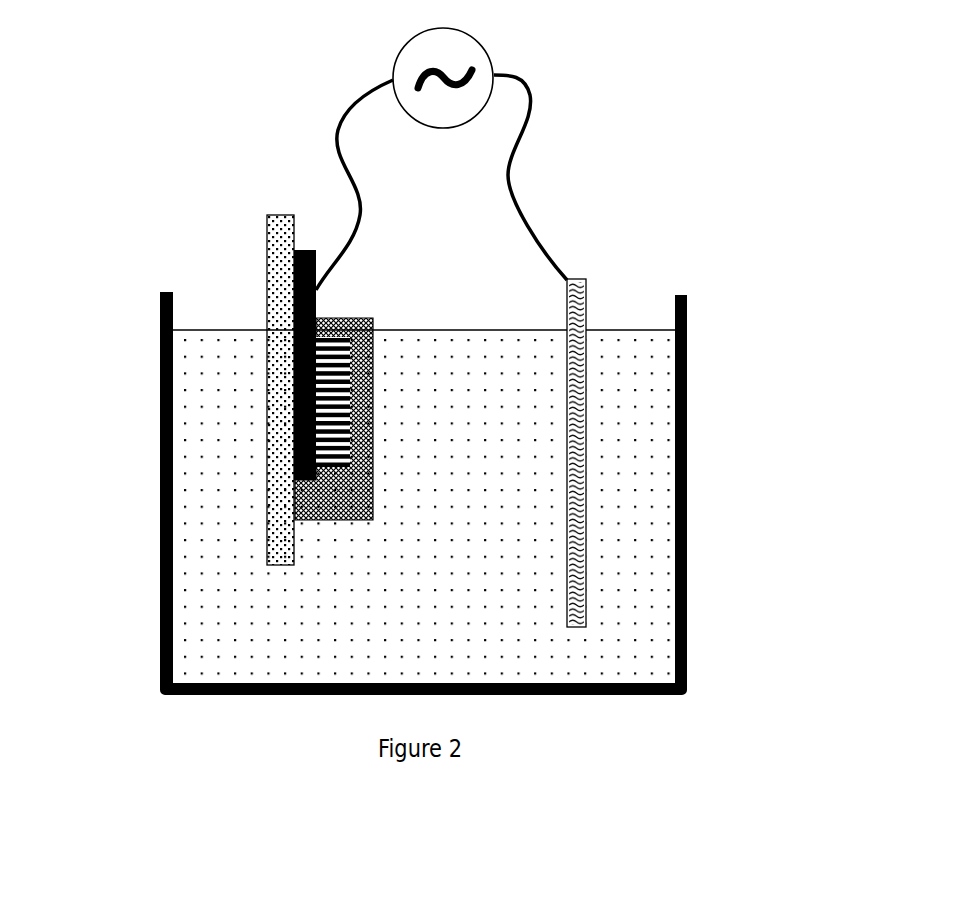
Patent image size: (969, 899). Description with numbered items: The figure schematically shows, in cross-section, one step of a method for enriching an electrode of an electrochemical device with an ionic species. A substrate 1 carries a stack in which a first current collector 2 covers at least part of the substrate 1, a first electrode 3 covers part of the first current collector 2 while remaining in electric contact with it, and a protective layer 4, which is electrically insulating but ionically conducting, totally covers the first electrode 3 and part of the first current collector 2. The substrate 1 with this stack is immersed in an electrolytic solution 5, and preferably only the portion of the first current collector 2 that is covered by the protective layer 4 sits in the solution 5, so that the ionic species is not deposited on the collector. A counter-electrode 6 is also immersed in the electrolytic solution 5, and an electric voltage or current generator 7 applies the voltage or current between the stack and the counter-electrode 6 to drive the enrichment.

The substrate 1 is at (280, 352).
The first current collector 2 is at (294, 458).
The first electrode 3 is at (293, 418).
The protective layer 4 is at (293, 495).
The electrolytic solution 5 is at (663, 412).
The counter-electrode 6 is at (570, 455).
The electric voltage or current generator 7 is at (393, 62).